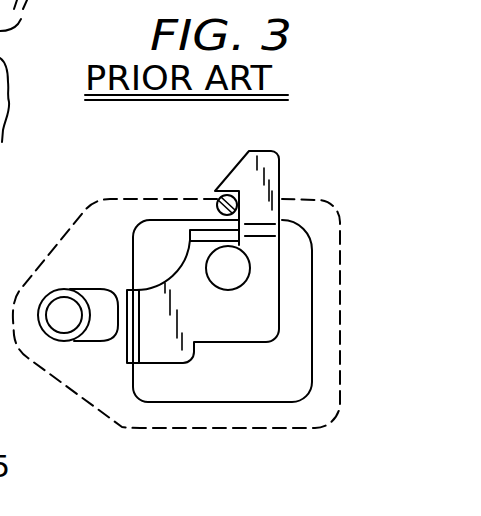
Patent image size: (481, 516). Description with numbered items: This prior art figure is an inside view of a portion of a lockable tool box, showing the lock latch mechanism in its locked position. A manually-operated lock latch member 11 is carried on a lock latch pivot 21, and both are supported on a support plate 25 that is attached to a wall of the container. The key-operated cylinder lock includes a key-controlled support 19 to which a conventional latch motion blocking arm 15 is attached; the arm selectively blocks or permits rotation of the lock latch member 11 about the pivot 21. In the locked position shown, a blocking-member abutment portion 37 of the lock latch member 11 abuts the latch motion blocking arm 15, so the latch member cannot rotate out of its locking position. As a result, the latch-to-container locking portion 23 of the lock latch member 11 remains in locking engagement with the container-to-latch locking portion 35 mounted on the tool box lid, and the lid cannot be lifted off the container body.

The manually-operated lock latch member 11 is at (265, 313).
The conventional latch motion blocking arm 15 is at (102, 318).
The key-controlled support 19 is at (78, 288).
The lock latch pivot 21 is at (247, 268).
The latch-to-container locking portion 23 is at (233, 175).
The support plate 25 is at (323, 197).
The container-to-latch locking portion 35 is at (216, 207).
The blocking-member abutment portion 37 is at (135, 320).